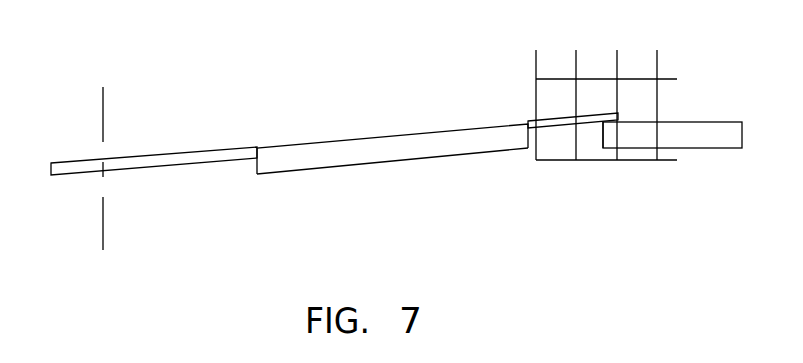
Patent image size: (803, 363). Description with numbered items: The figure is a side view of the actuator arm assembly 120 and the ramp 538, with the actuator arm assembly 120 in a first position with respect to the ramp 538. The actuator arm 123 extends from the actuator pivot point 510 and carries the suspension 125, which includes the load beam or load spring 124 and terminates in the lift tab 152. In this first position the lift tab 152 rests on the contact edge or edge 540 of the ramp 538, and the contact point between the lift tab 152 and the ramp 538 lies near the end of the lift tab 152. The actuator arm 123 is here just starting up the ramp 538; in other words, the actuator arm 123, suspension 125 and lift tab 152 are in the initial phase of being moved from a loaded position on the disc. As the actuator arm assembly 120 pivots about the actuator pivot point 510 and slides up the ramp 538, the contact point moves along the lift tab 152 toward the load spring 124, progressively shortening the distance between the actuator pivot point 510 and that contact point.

The actuator arm assembly 120 is at (289, 133).
The actuator arm 123 is at (180, 154).
The load beam 124 is at (405, 133).
The suspension 125 is at (390, 152).
The lift tab 152 is at (596, 112).
The actuator pivot point 510 is at (103, 113).
The ramp 538 is at (712, 140).
The edge 540 is at (603, 133).